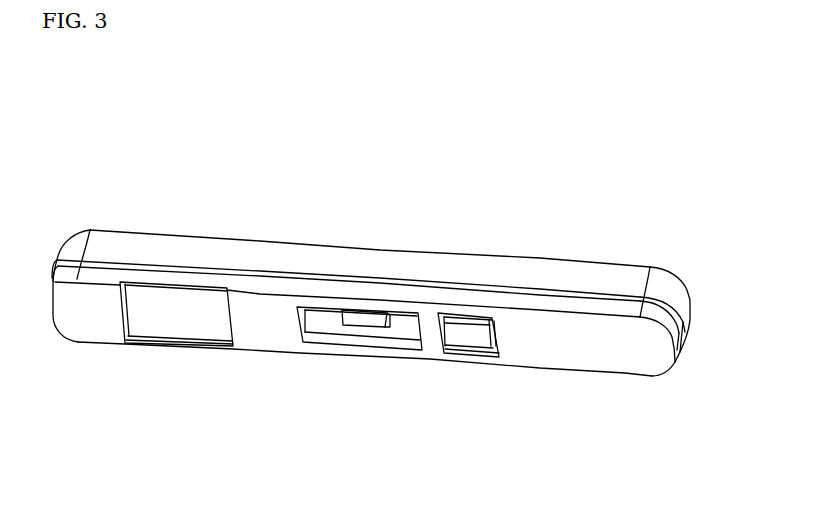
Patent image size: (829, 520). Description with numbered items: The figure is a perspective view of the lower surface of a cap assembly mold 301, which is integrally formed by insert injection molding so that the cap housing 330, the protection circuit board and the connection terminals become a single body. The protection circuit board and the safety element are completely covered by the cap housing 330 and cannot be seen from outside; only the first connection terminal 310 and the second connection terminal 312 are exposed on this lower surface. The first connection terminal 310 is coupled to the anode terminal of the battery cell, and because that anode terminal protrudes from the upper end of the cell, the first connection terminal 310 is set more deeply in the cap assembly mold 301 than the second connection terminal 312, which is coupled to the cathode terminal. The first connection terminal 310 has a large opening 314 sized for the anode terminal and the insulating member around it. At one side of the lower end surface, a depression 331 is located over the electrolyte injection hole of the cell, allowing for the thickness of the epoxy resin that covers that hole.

The cap assembly mold 301 is at (157, 172).
The cap housing 330 is at (567, 275).
The depression 331 is at (175, 322).
The opening 314 is at (318, 322).
The first connection terminal 310 is at (367, 320).
The second connection terminal 312 is at (460, 335).